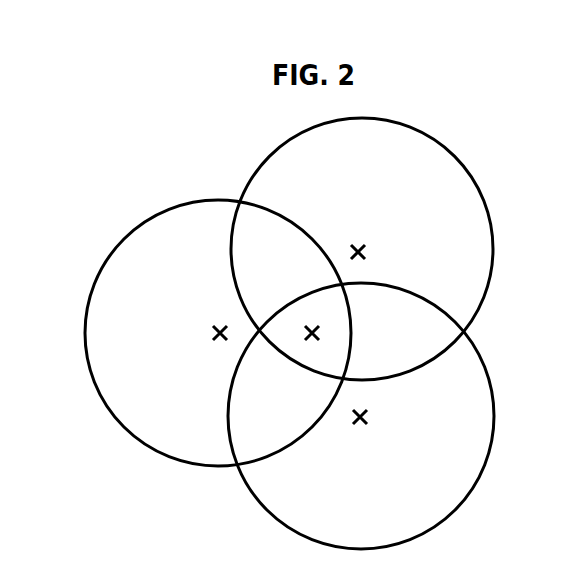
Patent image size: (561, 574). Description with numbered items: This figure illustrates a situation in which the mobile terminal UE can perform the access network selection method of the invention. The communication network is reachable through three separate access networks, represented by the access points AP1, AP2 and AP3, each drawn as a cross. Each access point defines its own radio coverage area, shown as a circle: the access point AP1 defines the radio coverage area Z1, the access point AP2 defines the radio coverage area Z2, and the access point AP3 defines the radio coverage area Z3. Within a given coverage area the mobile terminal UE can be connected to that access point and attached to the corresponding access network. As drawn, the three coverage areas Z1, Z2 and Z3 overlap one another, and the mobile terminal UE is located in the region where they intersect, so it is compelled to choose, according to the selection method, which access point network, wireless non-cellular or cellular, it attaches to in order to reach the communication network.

The radio coverage area Z1 is at (492, 255).
The radio coverage area Z2 is at (85, 338).
The radio coverage area Z3 is at (493, 413).
The access point AP1 is at (382, 257).
The access point AP2 is at (196, 337).
The access point AP3 is at (383, 419).
The mobile terminal UE is at (295, 334).